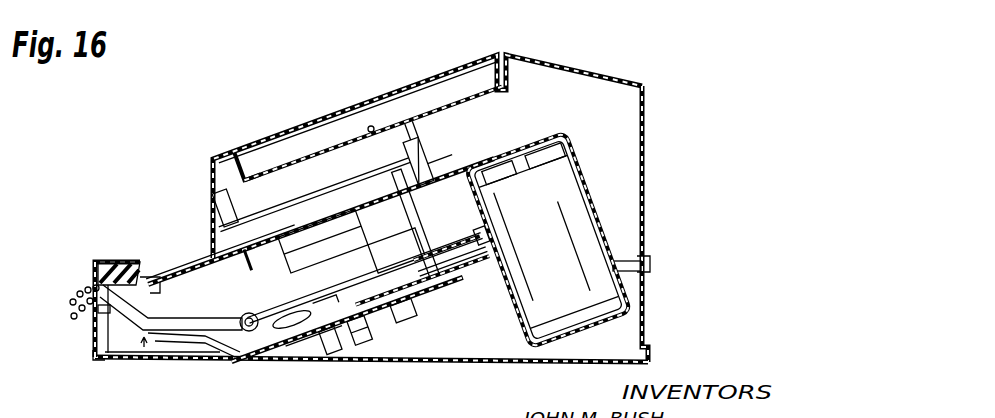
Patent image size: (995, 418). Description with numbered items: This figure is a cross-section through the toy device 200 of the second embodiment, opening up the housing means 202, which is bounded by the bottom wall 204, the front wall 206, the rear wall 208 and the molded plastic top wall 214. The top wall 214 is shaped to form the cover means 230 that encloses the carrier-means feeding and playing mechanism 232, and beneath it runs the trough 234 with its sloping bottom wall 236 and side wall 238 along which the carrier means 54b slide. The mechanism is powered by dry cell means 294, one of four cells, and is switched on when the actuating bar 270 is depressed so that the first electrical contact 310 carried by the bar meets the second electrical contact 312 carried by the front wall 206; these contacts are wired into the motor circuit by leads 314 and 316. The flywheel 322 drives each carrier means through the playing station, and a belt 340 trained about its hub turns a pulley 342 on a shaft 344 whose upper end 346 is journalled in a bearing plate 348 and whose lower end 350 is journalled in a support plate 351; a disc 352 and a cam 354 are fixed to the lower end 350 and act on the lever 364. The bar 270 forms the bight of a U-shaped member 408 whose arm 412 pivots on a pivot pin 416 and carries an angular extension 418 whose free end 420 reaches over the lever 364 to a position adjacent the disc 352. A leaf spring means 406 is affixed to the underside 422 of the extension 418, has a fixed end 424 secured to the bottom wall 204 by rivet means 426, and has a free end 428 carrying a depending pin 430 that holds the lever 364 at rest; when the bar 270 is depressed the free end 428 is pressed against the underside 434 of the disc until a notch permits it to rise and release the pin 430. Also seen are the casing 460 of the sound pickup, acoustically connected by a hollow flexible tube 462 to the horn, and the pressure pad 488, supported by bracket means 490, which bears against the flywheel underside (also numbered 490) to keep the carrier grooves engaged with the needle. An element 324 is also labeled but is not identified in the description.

The toy device 200 is at (560, 42).
The housing means 202 is at (673, 157).
The bottom wall 204 is at (180, 363).
The front wall 206 is at (97, 340).
The rear wall 208 is at (645, 205).
The top wall 214 is at (572, 68).
The cover means 230 is at (373, 124).
The carrier-means feeding and playing mechanism 232 is at (492, 188).
The trough 234 is at (245, 260).
The sloping bottom wall 236 is at (192, 268).
The side wall 238 is at (149, 273).
The actuating bar 270 is at (108, 262).
The dry cell means 294 is at (565, 160).
The first electrical contact 310 is at (124, 362).
The second electrical contact 312 is at (97, 368).
The lead 314 is at (67, 292).
The lead 316 is at (80, 322).
The flywheel 322 is at (232, 187).
The slide plate 324 is at (326, 144).
The belt 340 is at (366, 237).
The pulley 342 is at (420, 174).
The shaft 344 is at (472, 209).
The upper end 346 is at (400, 160).
The bearing plate 348 is at (414, 142).
The lower end 350 is at (437, 294).
The support plate 351 is at (450, 290).
The disc 352 is at (470, 240).
The cam 354 is at (400, 318).
The lever 364 is at (412, 330).
The leaf spring means 406 is at (287, 358).
The U-shaped member 408 is at (143, 365).
The arm 412 is at (190, 320).
The pivot pin 416 is at (218, 347).
The angular extension 418 is at (310, 296).
The free end 420 is at (366, 280).
The underside 422 is at (360, 258).
The fixed end 424 is at (247, 317).
The rivet means 426 is at (256, 320).
The free end 428 is at (345, 312).
The depending pin 430 is at (368, 338).
The underside 434 is at (492, 246).
The casing 460 is at (215, 352).
The hollow, flexible tube 462 is at (330, 344).
The pressure pad 488 is at (272, 250).
The bracket means 490 is at (262, 170).
The carrier means 54b is at (192, 270).